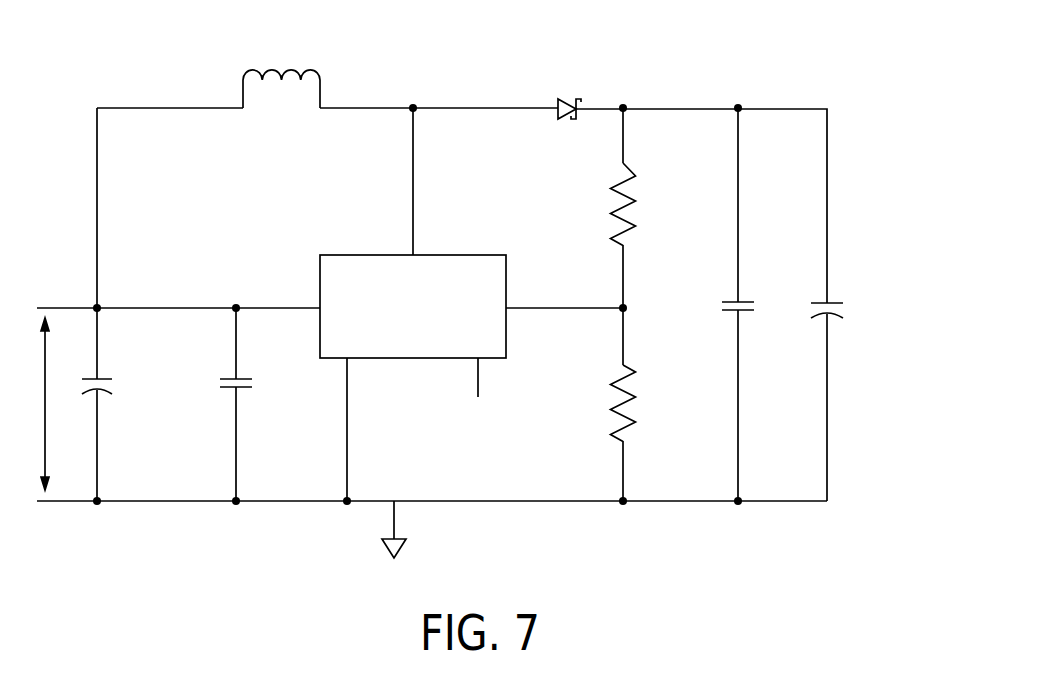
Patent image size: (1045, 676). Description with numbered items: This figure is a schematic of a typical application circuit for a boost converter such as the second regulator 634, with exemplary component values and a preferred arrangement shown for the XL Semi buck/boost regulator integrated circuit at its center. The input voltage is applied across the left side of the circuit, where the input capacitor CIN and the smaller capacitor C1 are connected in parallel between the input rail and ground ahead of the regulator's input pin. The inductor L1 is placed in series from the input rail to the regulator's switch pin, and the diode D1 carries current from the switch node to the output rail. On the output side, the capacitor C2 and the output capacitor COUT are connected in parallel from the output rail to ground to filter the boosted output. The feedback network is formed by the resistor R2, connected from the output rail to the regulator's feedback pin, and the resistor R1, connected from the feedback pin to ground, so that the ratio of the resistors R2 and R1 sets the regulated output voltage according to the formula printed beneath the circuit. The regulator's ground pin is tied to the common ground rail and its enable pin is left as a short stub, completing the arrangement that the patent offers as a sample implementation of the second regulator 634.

The second regulator 634 is at (488, 289).
The inductor 47uH/5A L1 is at (280, 72).
The Schottky diode MBRD1045 D1 is at (570, 92).
The input capacitor 220uF/25V CIN is at (141, 384).
The input ceramic capacitor 105 C1 is at (258, 388).
The feedback resistor 24K 1% R2 is at (651, 208).
The feedback resistor 2.74K 1% R1 is at (660, 407).
The output ceramic capacitor 105 C2 is at (761, 304).
The output capacitor 220uF/25V COUT is at (868, 320).